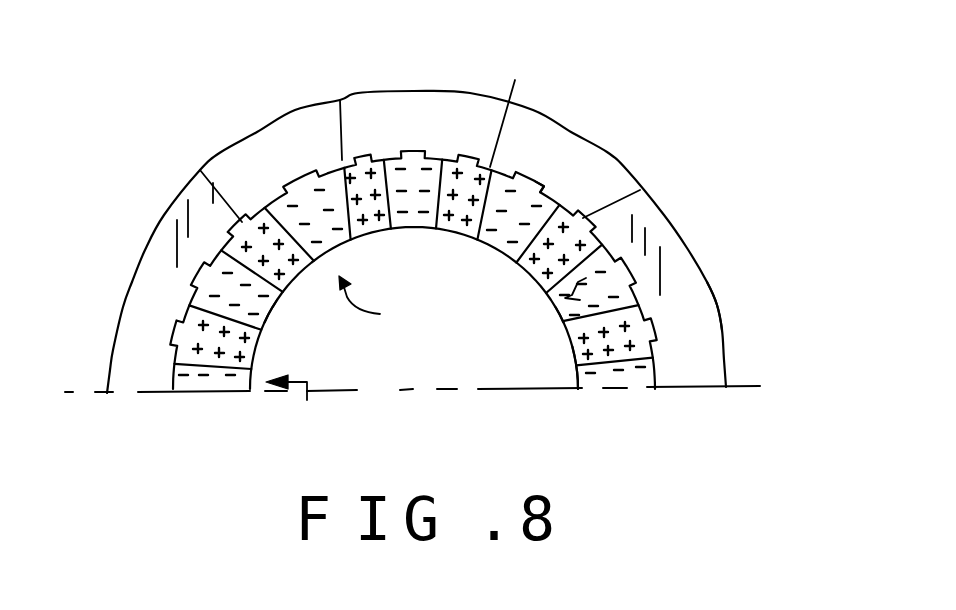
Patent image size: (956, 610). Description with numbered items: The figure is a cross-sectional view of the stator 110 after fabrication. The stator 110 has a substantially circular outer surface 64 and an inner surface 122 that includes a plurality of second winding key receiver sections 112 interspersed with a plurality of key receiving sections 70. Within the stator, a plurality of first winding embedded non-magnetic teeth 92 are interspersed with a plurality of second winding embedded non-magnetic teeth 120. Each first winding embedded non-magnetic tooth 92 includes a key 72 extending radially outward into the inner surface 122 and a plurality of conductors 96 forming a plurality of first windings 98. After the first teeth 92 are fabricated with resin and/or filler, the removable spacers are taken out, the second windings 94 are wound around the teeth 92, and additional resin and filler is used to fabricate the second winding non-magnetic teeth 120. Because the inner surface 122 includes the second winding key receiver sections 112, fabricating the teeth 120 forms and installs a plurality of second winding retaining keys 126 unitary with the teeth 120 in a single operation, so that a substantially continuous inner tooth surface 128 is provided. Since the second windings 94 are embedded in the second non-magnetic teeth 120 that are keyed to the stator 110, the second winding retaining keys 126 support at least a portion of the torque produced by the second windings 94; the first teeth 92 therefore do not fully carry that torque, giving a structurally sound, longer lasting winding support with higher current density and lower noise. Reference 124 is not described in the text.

The outer surface 64 is at (636, 178).
The key receiving sections 70 is at (418, 150).
The key 72 is at (545, 183).
The first winding embedded non-magnetic teeth 92 is at (418, 230).
The second windings 94 is at (266, 207).
The conductors 96 is at (270, 312).
The first windings 98 is at (307, 400).
The stator 110 is at (717, 305).
The second winding key receiver sections 112 is at (357, 157).
The second winding embedded non-magnetic teeth 120 is at (298, 283).
The inner surface 122 is at (640, 305).
The magnet segment 124 is at (190, 312).
The second winding retaining keys 126 is at (200, 170).
The inner tooth surface 128 is at (580, 366).